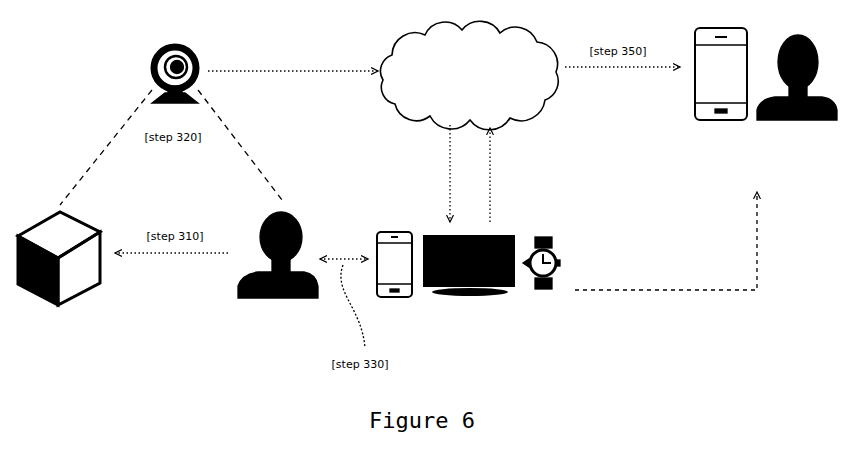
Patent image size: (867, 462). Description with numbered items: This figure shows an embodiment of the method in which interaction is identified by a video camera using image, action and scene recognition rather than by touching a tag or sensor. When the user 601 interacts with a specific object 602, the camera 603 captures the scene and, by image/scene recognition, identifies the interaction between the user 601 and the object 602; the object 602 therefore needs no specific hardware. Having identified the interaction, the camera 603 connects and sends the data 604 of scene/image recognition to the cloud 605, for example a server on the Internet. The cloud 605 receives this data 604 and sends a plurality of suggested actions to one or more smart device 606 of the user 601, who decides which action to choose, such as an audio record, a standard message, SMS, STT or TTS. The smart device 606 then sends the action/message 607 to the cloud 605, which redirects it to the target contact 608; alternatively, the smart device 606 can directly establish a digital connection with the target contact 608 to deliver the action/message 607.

The user 601 is at (278, 275).
The object 602 is at (59, 279).
The camera 603 is at (175, 55).
The data of scene/image recognition 604 is at (329, 146).
The cloud 605 is at (469, 75).
The smart device 606 is at (468, 287).
The action/message 607 is at (623, 221).
The target contact 608 is at (766, 98).